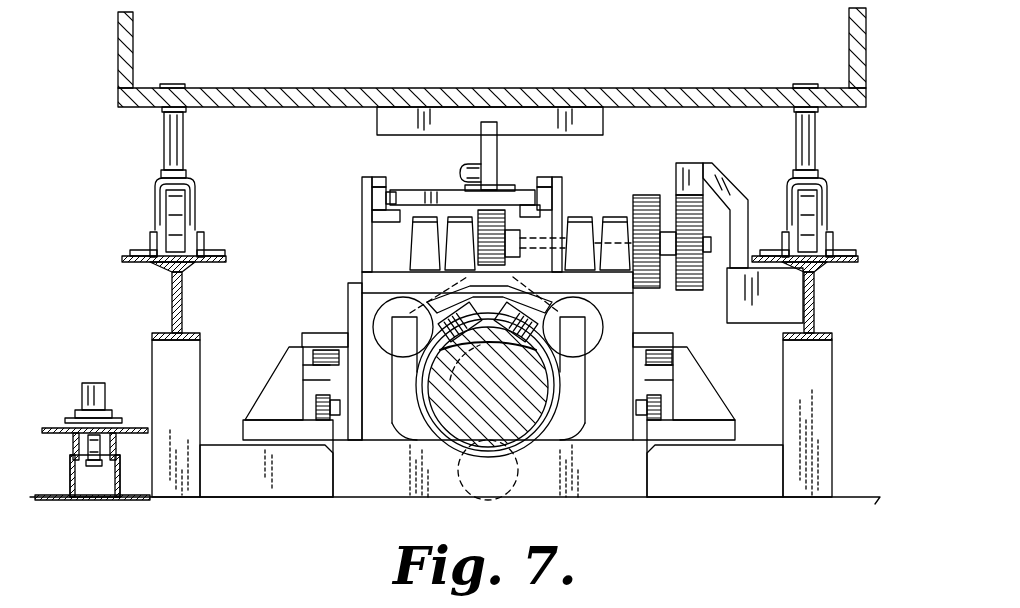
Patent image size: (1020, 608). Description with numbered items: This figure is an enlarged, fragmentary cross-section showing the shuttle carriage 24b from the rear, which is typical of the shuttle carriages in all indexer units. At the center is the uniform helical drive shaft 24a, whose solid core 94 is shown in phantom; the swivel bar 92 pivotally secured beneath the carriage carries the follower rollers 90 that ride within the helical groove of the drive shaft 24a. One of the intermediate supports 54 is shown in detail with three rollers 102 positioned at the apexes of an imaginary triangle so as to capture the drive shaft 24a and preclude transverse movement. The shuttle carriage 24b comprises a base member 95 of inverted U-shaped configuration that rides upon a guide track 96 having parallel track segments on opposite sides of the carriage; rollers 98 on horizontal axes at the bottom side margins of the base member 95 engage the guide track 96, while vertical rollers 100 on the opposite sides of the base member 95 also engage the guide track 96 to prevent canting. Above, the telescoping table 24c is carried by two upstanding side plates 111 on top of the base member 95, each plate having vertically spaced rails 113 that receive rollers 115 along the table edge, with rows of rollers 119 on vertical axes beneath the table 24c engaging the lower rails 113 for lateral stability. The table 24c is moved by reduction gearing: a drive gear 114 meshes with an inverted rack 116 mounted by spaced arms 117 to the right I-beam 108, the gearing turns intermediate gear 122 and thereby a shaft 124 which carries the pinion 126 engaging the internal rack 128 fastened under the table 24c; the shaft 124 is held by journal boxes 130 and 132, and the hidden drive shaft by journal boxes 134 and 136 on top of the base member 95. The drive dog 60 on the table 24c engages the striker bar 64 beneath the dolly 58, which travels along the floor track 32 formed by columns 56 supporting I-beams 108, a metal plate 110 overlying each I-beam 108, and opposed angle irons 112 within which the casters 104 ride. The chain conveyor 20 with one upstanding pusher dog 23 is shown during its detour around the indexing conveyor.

The dolly 58 is at (293, 88).
The striker bar 64 is at (598, 122).
The drive dog 60 is at (497, 148).
The telescoping table 24c is at (442, 190).
The side plates 111 is at (362, 207).
The rails 113 is at (380, 177).
The rollers 115 is at (372, 198).
The rollers 119 is at (418, 193).
The journal box 134 is at (425, 243).
The journal box 130 is at (460, 243).
The journal box 136 is at (580, 243).
The journal box 132 is at (615, 243).
The internal rack 128 is at (493, 213).
The shaft 124 is at (548, 240).
The intermediate gear 122 is at (660, 185).
The drive gear 114 is at (688, 288).
The inverted rack 116 is at (688, 175).
The arms 117 is at (720, 180).
The casters 104 is at (185, 200).
The angle irons 112 is at (150, 240).
The metal plate 110 is at (135, 262).
The I-beam 108 is at (182, 300).
The columns 56 is at (192, 497).
The floor track 32 is at (138, 318).
The chain conveyor 20 is at (92, 426).
The pusher dog 23 is at (95, 383).
The intermediate support 54 is at (620, 497).
The swivel bar 92 is at (545, 293).
The base member 95 is at (350, 292).
The accumulation shuttle carriage 24b is at (330, 272).
The rollers 102 is at (390, 322).
The uniform helical drive shaft 24a is at (518, 425).
The follower rollers 90 is at (470, 330).
The pinion 126 is at (485, 308).
The solid core 94 is at (460, 430).
The vertical rollers 100 is at (305, 340).
The guide track 96 is at (300, 383).
The rollers 98 is at (318, 405).